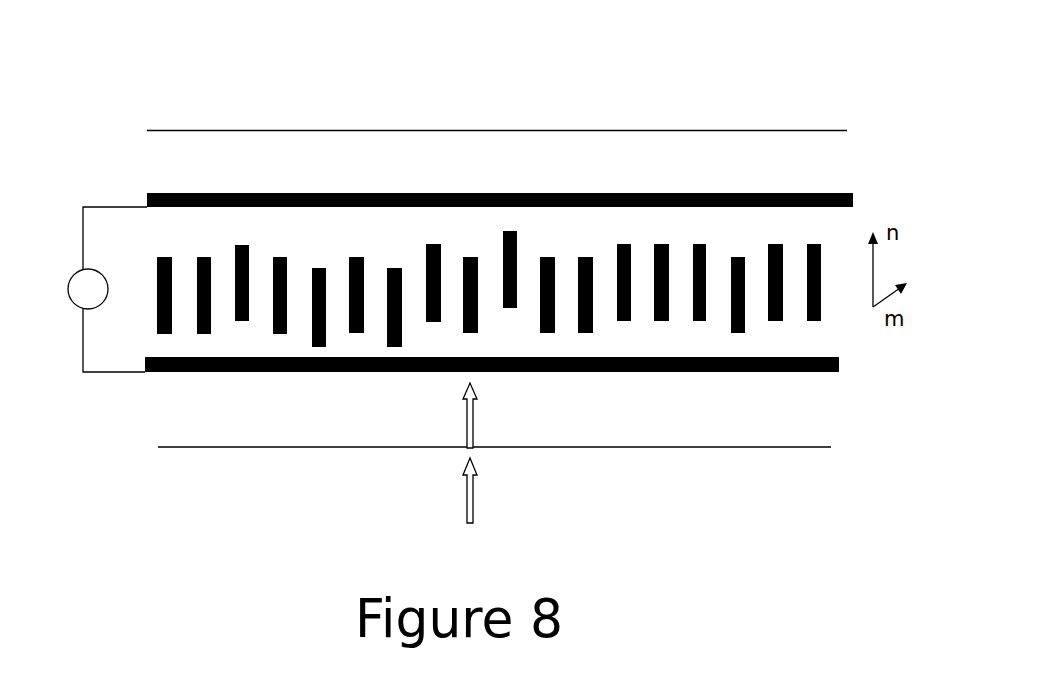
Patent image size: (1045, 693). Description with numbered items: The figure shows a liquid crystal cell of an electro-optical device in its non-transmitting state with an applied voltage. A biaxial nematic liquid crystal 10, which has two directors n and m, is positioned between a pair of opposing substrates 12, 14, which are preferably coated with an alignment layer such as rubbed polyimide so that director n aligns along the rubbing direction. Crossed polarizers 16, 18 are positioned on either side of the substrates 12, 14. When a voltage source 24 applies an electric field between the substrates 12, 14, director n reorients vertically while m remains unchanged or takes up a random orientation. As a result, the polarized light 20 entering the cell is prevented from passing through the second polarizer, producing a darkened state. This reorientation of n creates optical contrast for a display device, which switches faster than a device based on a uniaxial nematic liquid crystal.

The biaxial nematic liquid crystal 10 is at (625, 234).
The substrate 12 is at (197, 183).
The substrate 14 is at (720, 384).
The polarizer 16 is at (335, 458).
The polarizer 18 is at (247, 124).
The polarized light 20 is at (488, 421).
The voltage source 24 is at (74, 262).